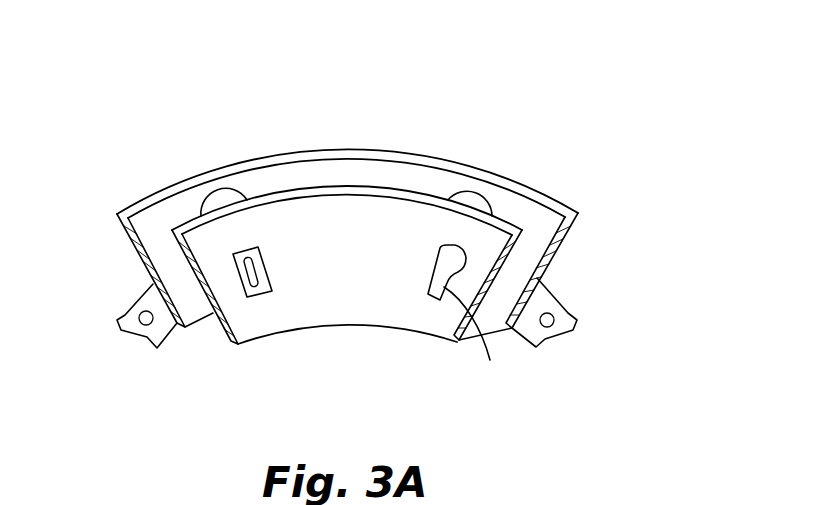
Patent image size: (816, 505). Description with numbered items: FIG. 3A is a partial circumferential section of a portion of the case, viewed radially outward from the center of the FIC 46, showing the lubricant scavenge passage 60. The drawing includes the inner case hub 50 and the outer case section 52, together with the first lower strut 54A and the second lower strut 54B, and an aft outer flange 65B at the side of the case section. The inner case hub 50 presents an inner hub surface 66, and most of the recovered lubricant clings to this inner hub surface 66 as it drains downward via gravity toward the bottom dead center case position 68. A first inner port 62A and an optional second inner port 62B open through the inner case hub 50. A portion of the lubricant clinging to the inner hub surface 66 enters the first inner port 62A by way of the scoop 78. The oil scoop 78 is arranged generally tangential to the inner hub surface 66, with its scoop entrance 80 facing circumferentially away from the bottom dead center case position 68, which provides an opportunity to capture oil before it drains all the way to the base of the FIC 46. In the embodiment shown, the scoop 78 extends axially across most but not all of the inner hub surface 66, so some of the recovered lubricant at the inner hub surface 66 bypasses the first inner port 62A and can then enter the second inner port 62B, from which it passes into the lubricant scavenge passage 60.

The FIC 46 is at (713, 85).
The inner case hub 50 is at (344, 338).
The outer case section 52 is at (137, 191).
The first lower strut 54A is at (472, 195).
The second lower strut 54B is at (227, 195).
The lubricant scavenge passage 60 is at (538, 166).
The first inner port 62A is at (426, 314).
The second inner port 62B is at (246, 314).
The aft outer flange 65B is at (130, 311).
The inner hub surface 66 is at (306, 310).
The bottom dead center (BDC) case position 68 is at (240, 150).
The scoop 78 is at (458, 262).
The scoop entrance 80 is at (490, 360).